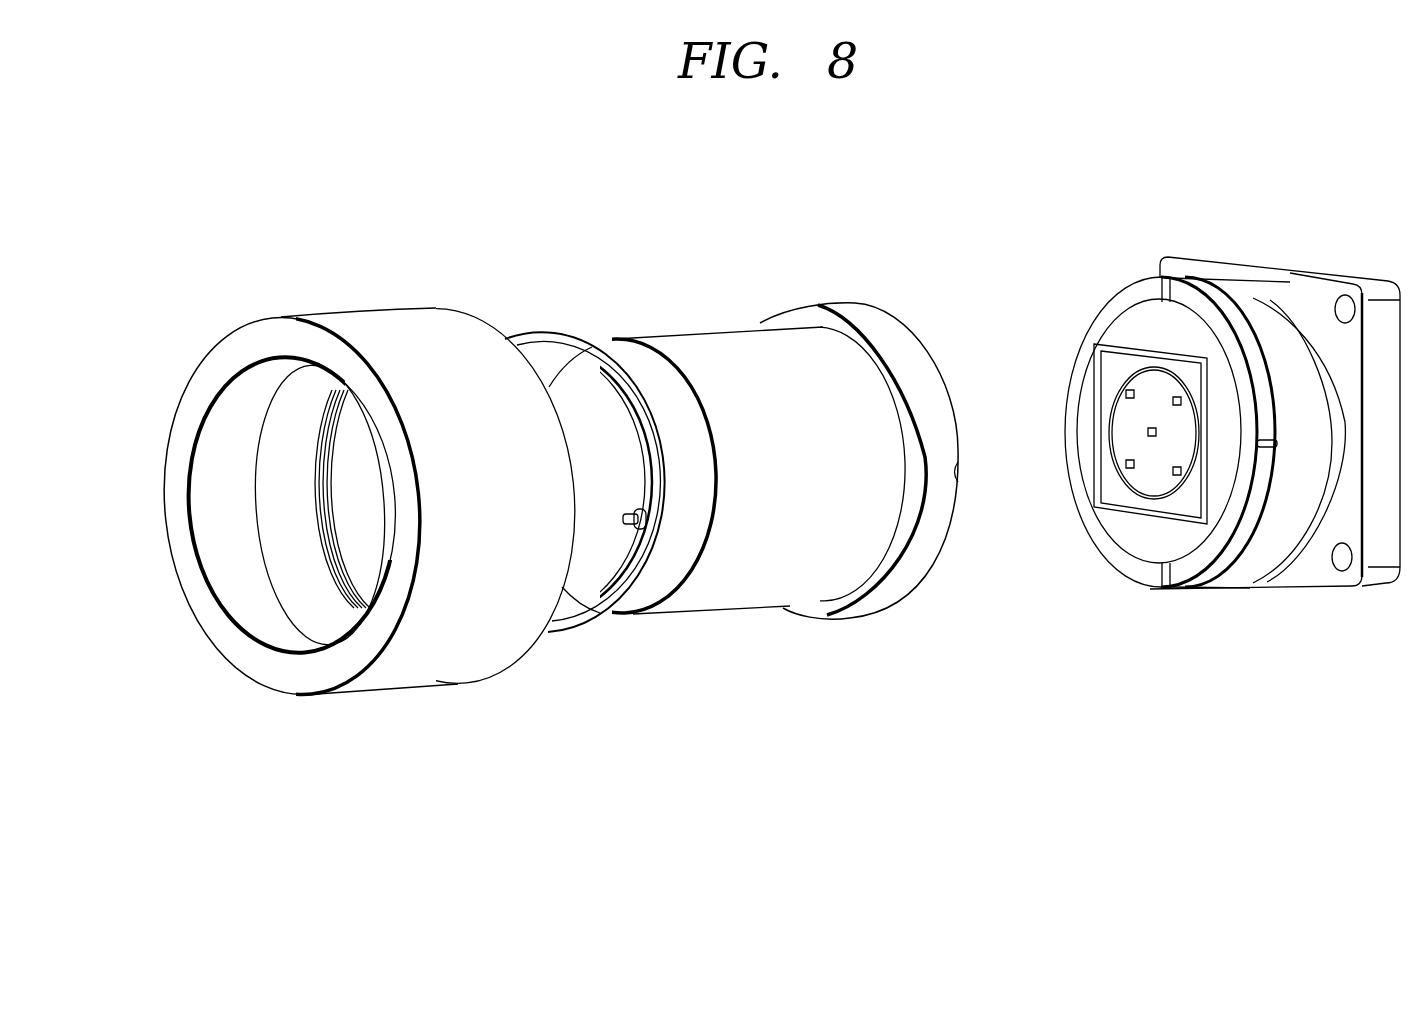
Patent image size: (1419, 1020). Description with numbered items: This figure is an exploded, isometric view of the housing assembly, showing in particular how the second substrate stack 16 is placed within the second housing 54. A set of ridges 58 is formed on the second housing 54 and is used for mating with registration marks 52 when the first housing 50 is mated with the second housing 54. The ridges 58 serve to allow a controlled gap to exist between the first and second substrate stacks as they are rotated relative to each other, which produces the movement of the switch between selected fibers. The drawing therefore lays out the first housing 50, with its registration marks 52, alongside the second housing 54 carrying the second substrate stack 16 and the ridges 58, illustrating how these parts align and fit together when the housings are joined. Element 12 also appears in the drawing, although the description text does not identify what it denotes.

The pin 12 is at (625, 522).
The second substrate stack 16 is at (1113, 492).
The first housing 50 is at (727, 360).
The registration marks 52 is at (963, 471).
The second housing 54 is at (1138, 290).
The ridges 58 is at (1172, 278).